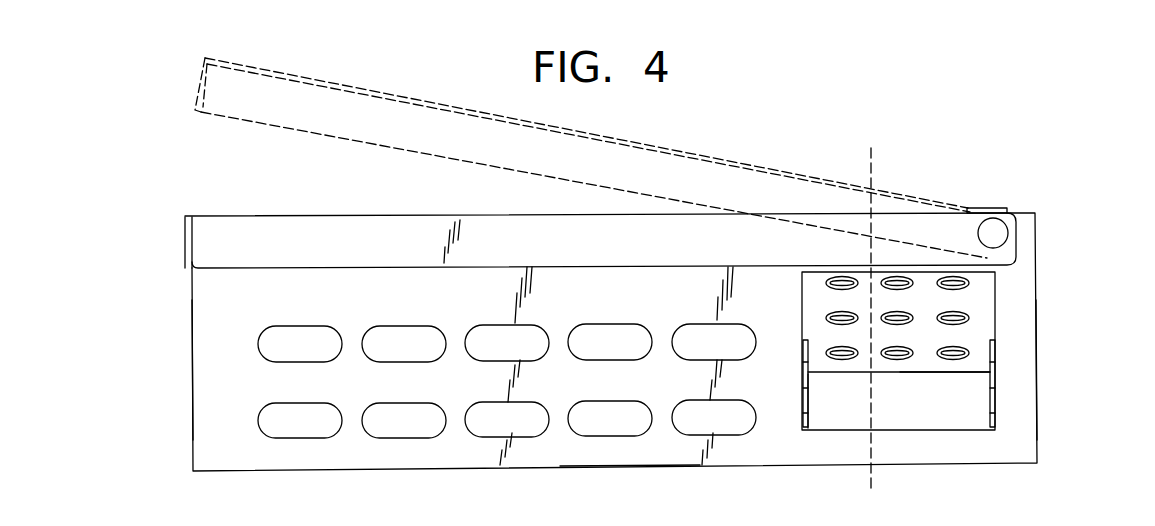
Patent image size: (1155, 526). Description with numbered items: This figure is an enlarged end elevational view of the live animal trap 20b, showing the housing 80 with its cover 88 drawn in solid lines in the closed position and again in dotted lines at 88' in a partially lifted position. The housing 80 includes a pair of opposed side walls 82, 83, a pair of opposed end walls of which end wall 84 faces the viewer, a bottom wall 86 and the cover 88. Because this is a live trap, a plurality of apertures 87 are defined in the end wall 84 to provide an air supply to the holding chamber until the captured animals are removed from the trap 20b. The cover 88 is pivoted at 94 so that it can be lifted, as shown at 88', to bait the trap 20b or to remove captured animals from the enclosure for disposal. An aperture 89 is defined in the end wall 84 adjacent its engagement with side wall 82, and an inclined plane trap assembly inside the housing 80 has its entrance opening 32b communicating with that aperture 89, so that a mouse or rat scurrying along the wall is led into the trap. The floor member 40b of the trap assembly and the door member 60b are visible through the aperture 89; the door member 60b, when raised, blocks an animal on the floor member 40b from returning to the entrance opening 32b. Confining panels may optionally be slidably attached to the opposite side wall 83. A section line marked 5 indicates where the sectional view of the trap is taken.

The trap 20b is at (816, 127).
The housing 80 is at (151, 261).
The cover 88 is at (600, 220).
The cover in lifted position 88' is at (591, 158).
The pivot 94 is at (995, 230).
The section line 5- 5 is at (858, 157).
The opposed apertures 89 is at (997, 282).
The floor member 40b is at (976, 325).
The side wall 82 is at (1037, 368).
The side wall 83 is at (192, 367).
The end wall 84 is at (563, 455).
The bottom wall 86 is at (625, 466).
The apertures 87 is at (402, 428).
The door member 60b is at (842, 409).
The entrance opening 32b is at (949, 383).